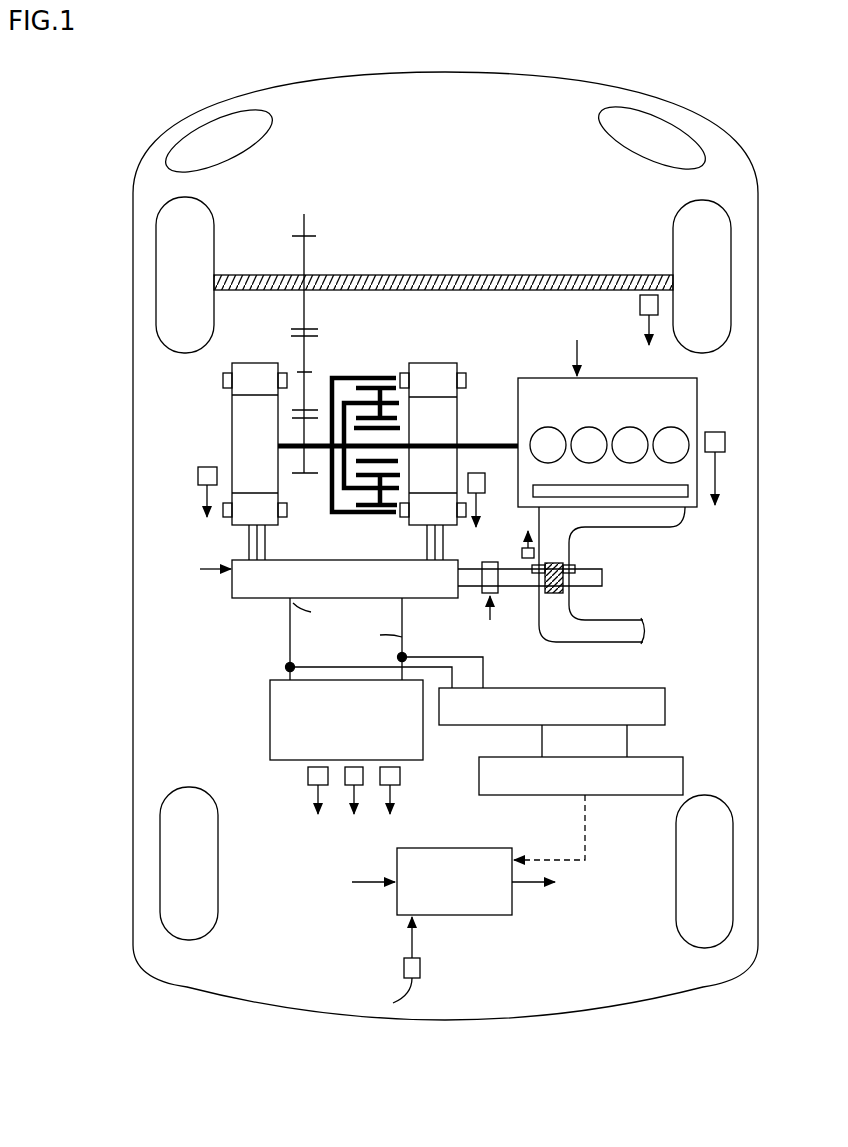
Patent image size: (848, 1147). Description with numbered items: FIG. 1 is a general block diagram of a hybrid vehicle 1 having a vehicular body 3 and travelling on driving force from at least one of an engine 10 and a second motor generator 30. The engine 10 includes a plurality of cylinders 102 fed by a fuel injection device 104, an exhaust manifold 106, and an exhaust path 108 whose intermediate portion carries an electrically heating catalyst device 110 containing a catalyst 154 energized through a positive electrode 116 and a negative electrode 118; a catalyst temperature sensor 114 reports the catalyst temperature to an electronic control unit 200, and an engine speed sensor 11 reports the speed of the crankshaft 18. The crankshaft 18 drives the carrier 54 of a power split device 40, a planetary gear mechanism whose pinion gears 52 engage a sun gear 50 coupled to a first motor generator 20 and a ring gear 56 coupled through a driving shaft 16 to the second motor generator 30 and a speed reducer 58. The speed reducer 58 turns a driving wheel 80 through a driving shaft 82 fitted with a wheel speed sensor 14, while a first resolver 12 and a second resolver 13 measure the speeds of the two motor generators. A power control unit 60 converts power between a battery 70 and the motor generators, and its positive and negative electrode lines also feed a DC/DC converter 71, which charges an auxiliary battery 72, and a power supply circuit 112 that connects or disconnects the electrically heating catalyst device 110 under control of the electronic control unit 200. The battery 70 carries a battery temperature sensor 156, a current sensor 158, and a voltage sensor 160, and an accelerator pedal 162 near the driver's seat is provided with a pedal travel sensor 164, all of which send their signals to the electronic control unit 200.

The hybrid vehicle 1 is at (430, 42).
The vehicular body 3 is at (746, 628).
The engine 10 is at (546, 378).
The engine speed sensor 11 is at (714, 432).
The first resolver 12 is at (485, 474).
The second resolver 13 is at (207, 467).
The wheel speed sensor 14 is at (640, 305).
The driving shaft 16 is at (325, 452).
The crankshaft 18 is at (506, 442).
The first motor generator 20 is at (434, 363).
The second motor generator 30 is at (258, 363).
The power split device 40 is at (382, 364).
The sun gear 50 is at (403, 443).
The pinion gears 52 is at (385, 505).
The carrier 54 is at (345, 488).
The ring gear 56 is at (353, 378).
The speed reducer 58 is at (304, 236).
The power control unit 60 is at (232, 590).
The battery 70 is at (270, 718).
The DC/DC converter 71 is at (652, 688).
The auxiliary battery 72 is at (650, 757).
The driving wheel 80 is at (682, 208).
The driving shaft 82 is at (520, 275).
The cylinders 102 is at (628, 427).
The fuel injection device 104 is at (653, 497).
The exhaust manifold 106 is at (677, 512).
The exhaust path 108 is at (613, 615).
The electrically heating catalyst device 110 is at (577, 600).
The power supply circuit 112 is at (482, 594).
The catalyst temperature sensor 114 is at (527, 560).
The positive electrode 116 is at (540, 565).
The negative electrode 118 is at (570, 565).
The catalyst 154 is at (555, 593).
The battery temperature sensor 156 is at (308, 775).
The current sensor 158 is at (355, 767).
The voltage sensor 160 is at (400, 777).
The accelerator pedal 162 is at (393, 1003).
The pedal travel sensor 164 is at (404, 968).
The electronic control unit 200 is at (452, 915).